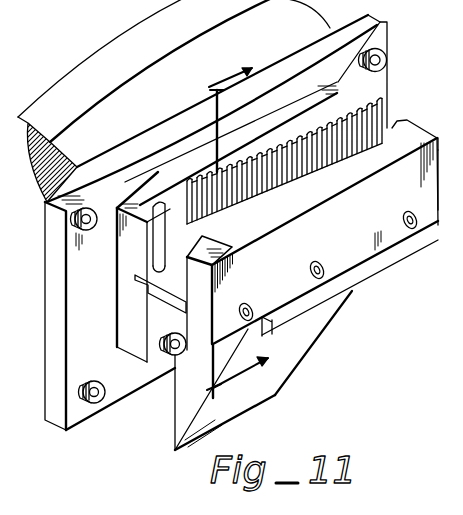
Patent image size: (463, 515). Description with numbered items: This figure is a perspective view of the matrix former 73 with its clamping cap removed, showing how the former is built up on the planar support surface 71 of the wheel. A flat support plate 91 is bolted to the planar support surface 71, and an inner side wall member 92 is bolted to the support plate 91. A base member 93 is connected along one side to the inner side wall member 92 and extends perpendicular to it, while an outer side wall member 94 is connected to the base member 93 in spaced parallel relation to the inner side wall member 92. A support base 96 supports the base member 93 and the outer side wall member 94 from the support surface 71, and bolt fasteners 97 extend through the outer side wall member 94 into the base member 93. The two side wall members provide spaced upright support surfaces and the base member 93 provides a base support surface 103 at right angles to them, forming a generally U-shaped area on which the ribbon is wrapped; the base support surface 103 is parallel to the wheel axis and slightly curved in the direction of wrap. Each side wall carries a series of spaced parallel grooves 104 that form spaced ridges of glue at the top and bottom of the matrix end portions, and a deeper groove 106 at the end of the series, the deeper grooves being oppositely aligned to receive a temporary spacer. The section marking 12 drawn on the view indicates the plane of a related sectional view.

The planar support surface 71 is at (93, 118).
The flat support plate 91 is at (62, 410).
The inner side wall member 92 is at (372, 16).
The base member 93 is at (165, 297).
The outer side wall member 94 is at (437, 139).
The support base 96 is at (370, 266).
The bolt fasteners 97 is at (324, 276).
The base support surface 103 is at (168, 268).
The spaced parallel grooves 104 is at (240, 170).
The deeper groove 106 is at (163, 204).
The matrix former 73 is at (417, 250).
The section line 12 is at (251, 218).